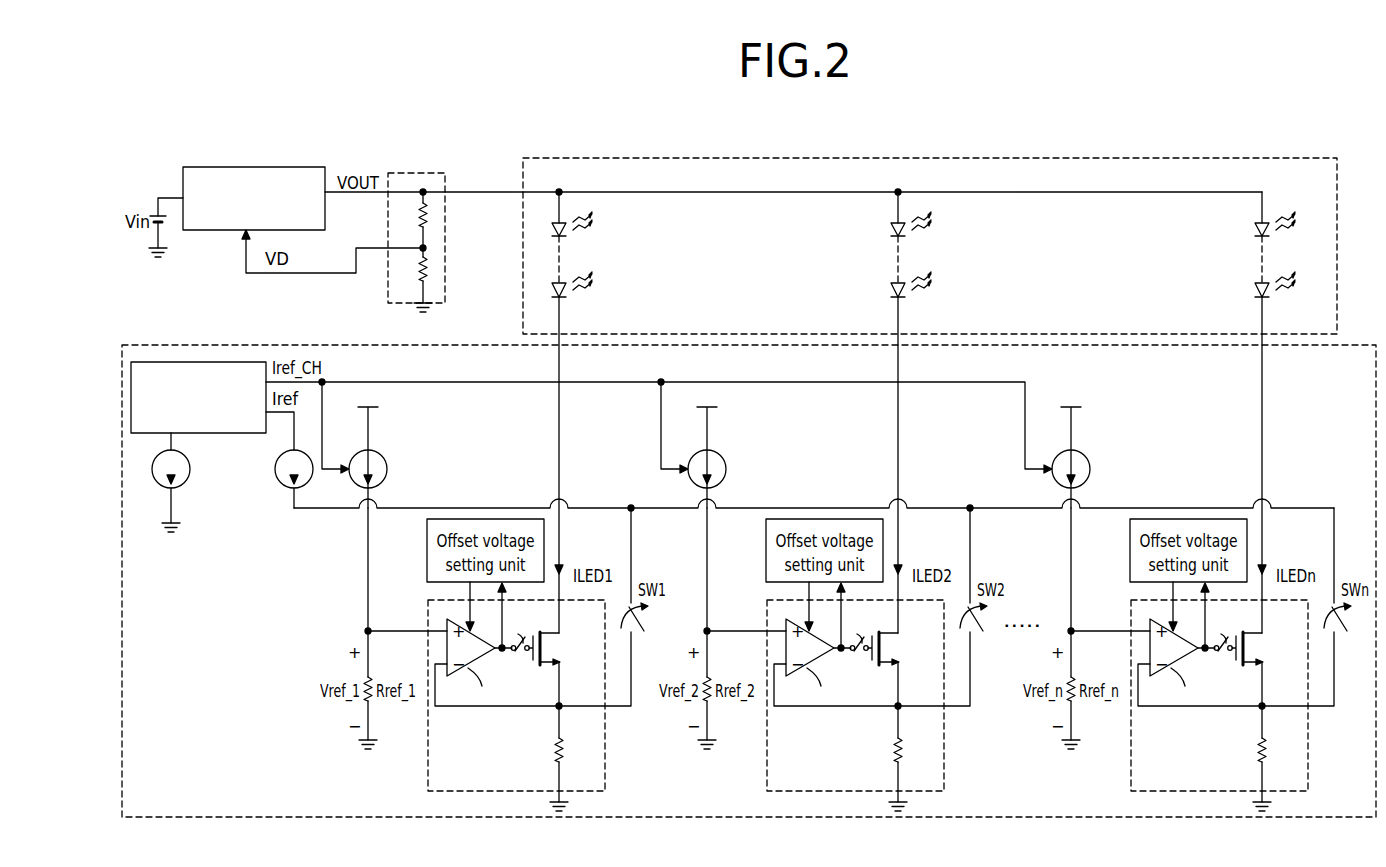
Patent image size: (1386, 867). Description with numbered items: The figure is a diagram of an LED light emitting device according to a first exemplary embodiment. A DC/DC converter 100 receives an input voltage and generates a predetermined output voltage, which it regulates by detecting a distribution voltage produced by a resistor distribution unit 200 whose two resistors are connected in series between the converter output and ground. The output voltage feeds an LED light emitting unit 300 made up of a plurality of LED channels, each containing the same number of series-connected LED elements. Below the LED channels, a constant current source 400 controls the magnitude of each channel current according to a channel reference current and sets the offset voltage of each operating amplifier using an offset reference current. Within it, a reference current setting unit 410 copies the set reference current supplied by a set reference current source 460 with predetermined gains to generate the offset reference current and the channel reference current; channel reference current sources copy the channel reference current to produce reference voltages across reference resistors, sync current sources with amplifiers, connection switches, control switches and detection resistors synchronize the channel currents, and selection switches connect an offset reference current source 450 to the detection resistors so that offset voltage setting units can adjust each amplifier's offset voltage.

The DC/DC converter 100 is at (250, 167).
The resistor distribution unit 200 is at (418, 173).
The LED light emitting unit 300 is at (905, 158).
The constant current source 400 is at (465, 345).
The reference current setting unit 410 is at (195, 362).
The offset reference current source 450 is at (277, 486).
The set reference current source 460 is at (160, 485).